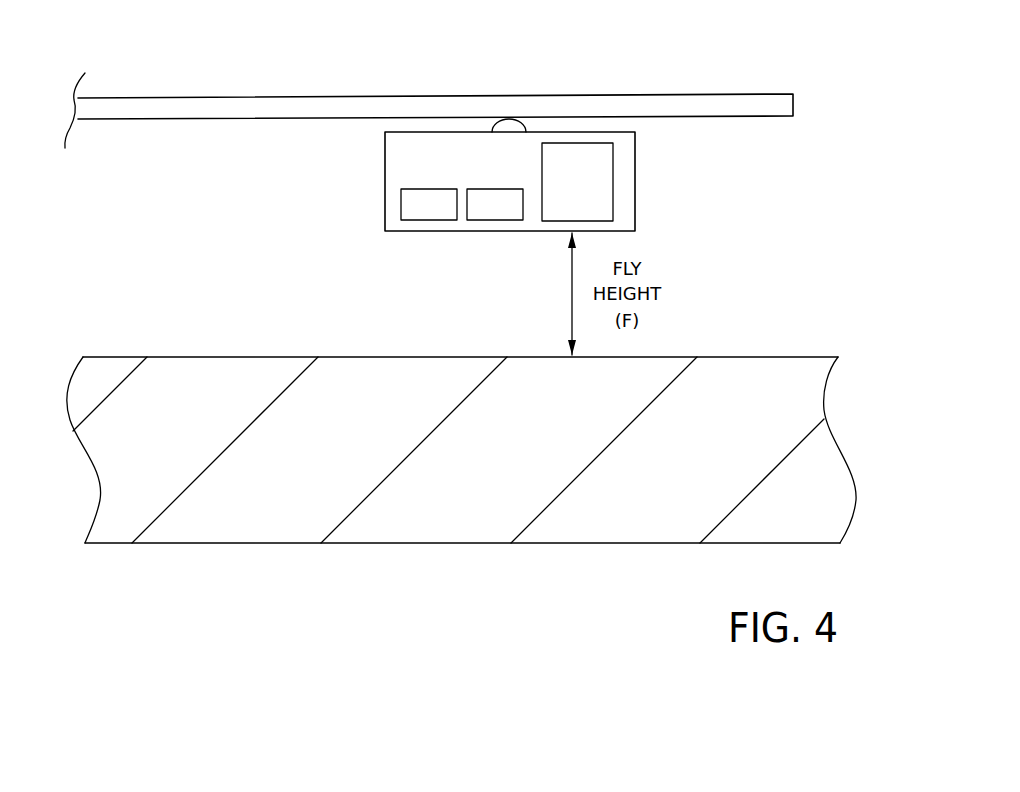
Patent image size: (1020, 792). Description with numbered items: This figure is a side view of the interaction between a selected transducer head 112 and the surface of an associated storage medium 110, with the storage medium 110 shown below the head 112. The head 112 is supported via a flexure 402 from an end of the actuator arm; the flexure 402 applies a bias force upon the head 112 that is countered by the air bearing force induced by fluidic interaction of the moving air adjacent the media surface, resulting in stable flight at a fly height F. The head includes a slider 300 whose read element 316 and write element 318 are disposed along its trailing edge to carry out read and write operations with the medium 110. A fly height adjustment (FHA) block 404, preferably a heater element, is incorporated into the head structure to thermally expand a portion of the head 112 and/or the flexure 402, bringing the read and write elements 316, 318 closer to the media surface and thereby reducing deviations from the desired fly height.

The storage medium 110 is at (267, 358).
The transducer head 112 is at (534, 48).
The slider 300 is at (375, 172).
The read element 316 is at (430, 220).
The write element 318 is at (494, 220).
The flexure 402 is at (205, 98).
The fly height adjustment (FHA) block 404 is at (613, 183).